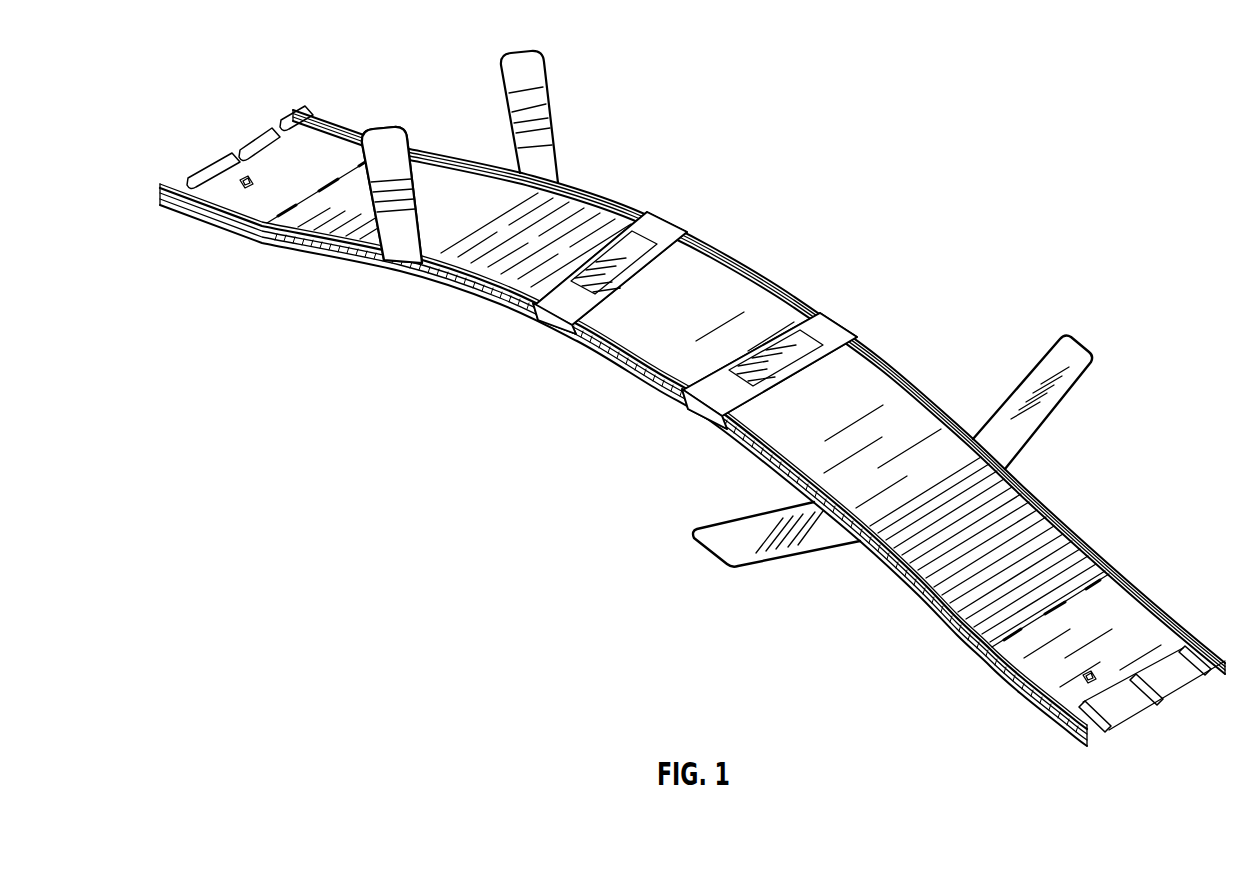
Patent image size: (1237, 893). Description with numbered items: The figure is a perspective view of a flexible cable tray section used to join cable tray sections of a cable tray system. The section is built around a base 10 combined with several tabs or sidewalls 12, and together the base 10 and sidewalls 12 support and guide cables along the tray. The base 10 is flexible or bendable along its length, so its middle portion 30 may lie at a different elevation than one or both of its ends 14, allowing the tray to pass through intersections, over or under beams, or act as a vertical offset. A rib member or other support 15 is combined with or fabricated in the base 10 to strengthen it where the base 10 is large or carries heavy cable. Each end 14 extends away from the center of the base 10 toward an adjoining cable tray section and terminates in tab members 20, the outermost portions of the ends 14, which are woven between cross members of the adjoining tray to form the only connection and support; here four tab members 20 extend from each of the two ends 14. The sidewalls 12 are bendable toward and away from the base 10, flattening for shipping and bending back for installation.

The base 10 is at (913, 589).
The sidewalls 12 is at (530, 94).
The ends 14 is at (1163, 616).
The rib member 15 is at (733, 264).
The tab member 20 is at (1177, 683).
The middle portion 30 is at (640, 340).